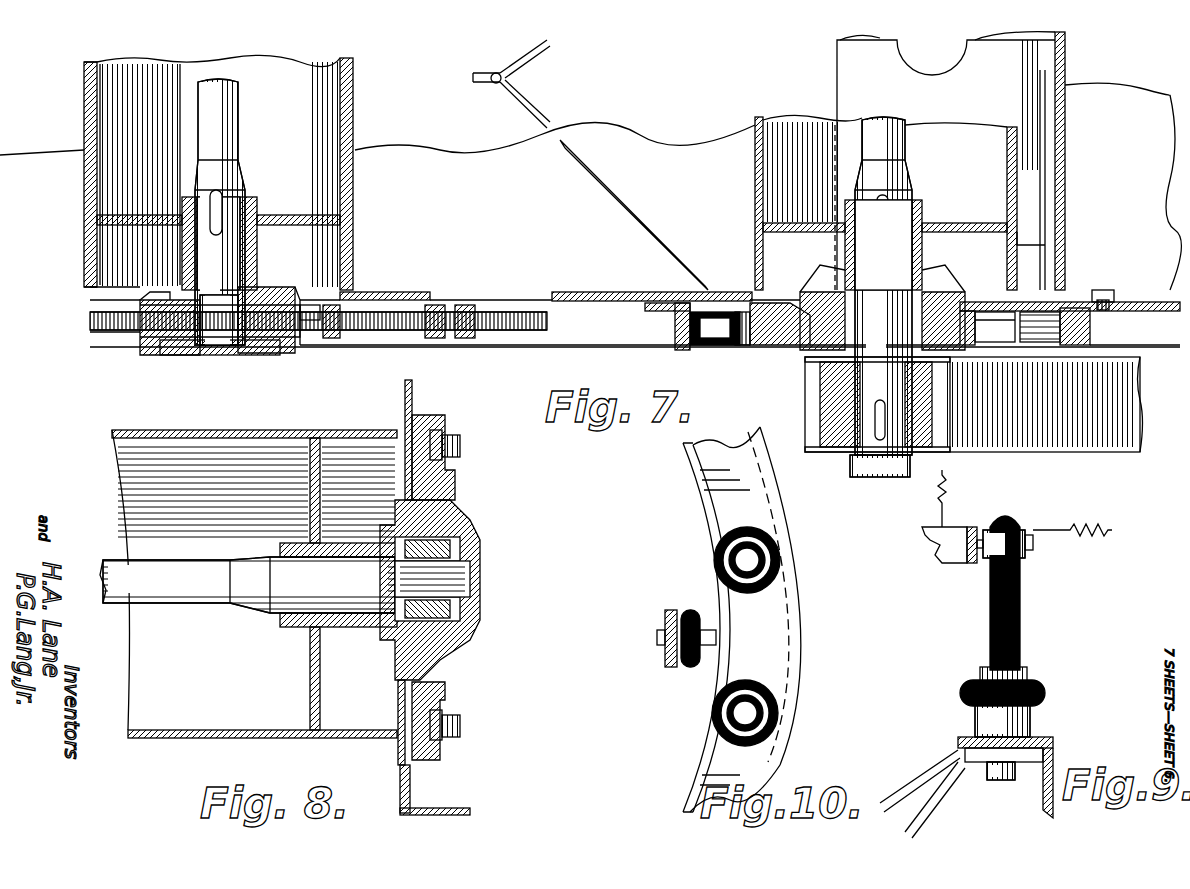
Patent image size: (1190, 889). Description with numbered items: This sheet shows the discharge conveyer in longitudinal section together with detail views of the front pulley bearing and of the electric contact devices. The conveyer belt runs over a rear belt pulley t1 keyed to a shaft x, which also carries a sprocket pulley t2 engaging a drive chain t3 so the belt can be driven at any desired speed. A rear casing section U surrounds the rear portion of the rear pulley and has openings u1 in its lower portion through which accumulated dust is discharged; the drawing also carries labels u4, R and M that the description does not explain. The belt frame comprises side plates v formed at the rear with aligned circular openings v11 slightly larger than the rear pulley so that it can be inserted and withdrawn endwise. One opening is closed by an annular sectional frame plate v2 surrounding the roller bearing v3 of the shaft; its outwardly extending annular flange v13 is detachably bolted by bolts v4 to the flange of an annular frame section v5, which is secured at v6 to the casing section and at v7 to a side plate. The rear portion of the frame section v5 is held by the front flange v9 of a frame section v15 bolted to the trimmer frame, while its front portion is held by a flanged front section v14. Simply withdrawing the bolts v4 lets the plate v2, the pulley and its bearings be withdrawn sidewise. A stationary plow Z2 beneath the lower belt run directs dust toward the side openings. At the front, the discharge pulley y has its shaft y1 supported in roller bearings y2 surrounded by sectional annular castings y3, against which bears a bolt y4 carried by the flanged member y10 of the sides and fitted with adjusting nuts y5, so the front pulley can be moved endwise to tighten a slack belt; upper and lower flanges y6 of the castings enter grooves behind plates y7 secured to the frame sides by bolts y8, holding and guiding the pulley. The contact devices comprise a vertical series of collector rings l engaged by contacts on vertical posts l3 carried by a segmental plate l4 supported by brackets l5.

In FIG. 8, the front or discharge pulley y is at (135, 665).
In FIG. 7, the shaft y1 is at (222, 135).
In FIG. 8, the shaft y1 is at (285, 615).
In FIG. 7, the roller bearings y2 is at (232, 350).
In FIG. 7, the sectional annular casting y3 is at (175, 348).
In FIG. 8, the sectional annular casting y3 is at (460, 515).
In FIG. 7, the bolt y4 is at (370, 280).
In FIG. 7, the adjusting nuts y5 is at (340, 340).
In FIG. 8, the upper and lower flanges y6 is at (445, 485).
In FIG. 8, the plates y7 is at (445, 435).
In FIG. 8, the bolts y8 is at (455, 448).
In FIG. 7, the flanged member y10 is at (412, 338).
In FIG. 8, the side plates v is at (405, 398).
In FIG. 7, the annular sectional frame plate v2 is at (755, 250).
In FIG. 7, the roller bearing v3 is at (950, 290).
In FIG. 7, the bolts v4 is at (745, 345).
In FIG. 7, the annular frame section v5 is at (1095, 292).
In FIG. 7, the securing point to casing section v6 is at (1080, 280).
In FIG. 7, the securing point to side plate v7 is at (640, 340).
In FIG. 7, the front flange v9 is at (1120, 440).
In FIG. 7, the circular openings v11 is at (740, 292).
In FIG. 7, the annular flange v13 is at (810, 348).
In FIG. 7, the flanged front section v14 is at (660, 320).
In FIG. 7, the frame section v15 is at (1148, 390).
In FIG. 7, the shaft x is at (905, 160).
In FIG. 7, the rear belt pulley t1 is at (755, 182).
In FIG. 7, the sprocket pulley t2 is at (865, 478).
In FIG. 7, the drive chain t3 is at (1075, 430).
In FIG. 7, the rear casing section U is at (1068, 142).
In FIG. 7, the openings u1 is at (905, 118).
In FIG. 7, the plate notch u4 is at (915, 80).
In FIG. 7, the wavy guide R is at (650, 130).
In FIG. 7, the stationary plow Z2 is at (535, 58).
In FIG. 7, the frame member M is at (1127, 337).
In FIG. 10, the collector rings l is at (720, 598).
In FIG. 9, the collector rings l is at (962, 562).
In FIG. 10, the vertical posts l3 is at (780, 712).
In FIG. 9, the vertical posts l3 is at (1020, 628).
In FIG. 10, the segmental plate l4 is at (785, 650).
In FIG. 9, the segmental plate l4 is at (1055, 740).
In FIG. 9, the brackets l5 is at (922, 793).